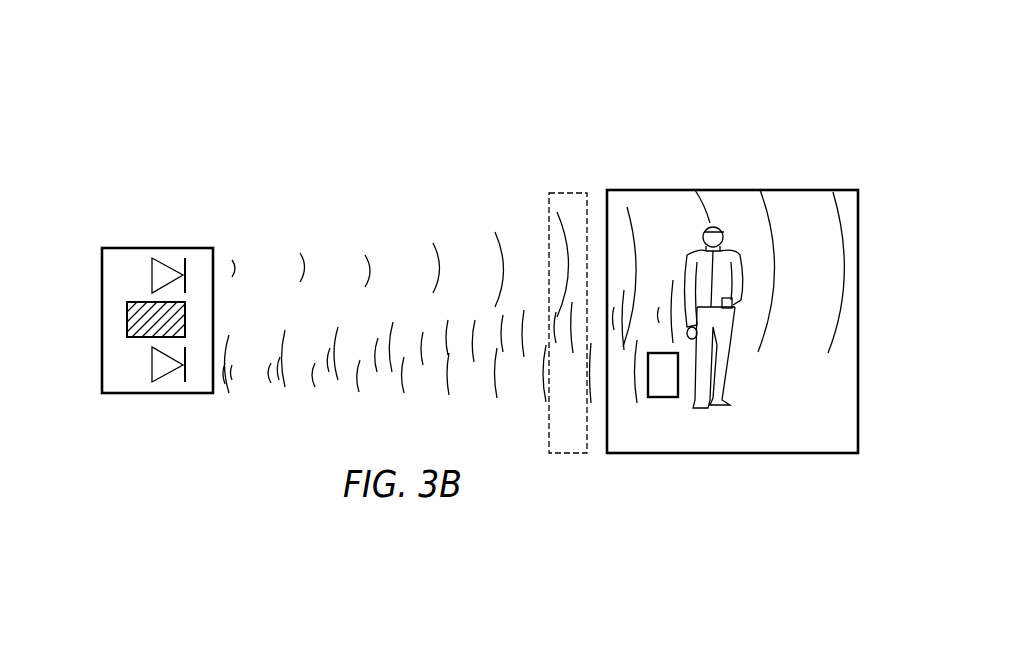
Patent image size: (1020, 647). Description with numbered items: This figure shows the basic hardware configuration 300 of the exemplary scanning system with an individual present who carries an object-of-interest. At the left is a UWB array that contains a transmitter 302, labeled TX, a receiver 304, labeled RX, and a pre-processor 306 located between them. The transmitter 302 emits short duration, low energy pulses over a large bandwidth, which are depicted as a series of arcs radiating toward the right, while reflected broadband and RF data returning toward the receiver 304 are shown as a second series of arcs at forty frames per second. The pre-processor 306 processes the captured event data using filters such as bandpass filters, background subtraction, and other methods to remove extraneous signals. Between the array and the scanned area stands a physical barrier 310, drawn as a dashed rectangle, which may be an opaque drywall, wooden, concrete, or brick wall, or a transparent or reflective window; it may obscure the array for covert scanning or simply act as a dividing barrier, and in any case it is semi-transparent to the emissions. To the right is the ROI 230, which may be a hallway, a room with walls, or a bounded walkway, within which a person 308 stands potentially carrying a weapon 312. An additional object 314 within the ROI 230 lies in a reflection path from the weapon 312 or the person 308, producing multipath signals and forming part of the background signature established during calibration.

The hardware configuration 300 is at (831, 101).
The transmitter 302 is at (120, 277).
The receiver 304 is at (120, 362).
The pre-processor 306 is at (127, 320).
The physical barrier 310 is at (568, 193).
The ROI 230 is at (690, 232).
The person 308 is at (737, 255).
The weapon 312 is at (727, 308).
The object 314 is at (670, 397).